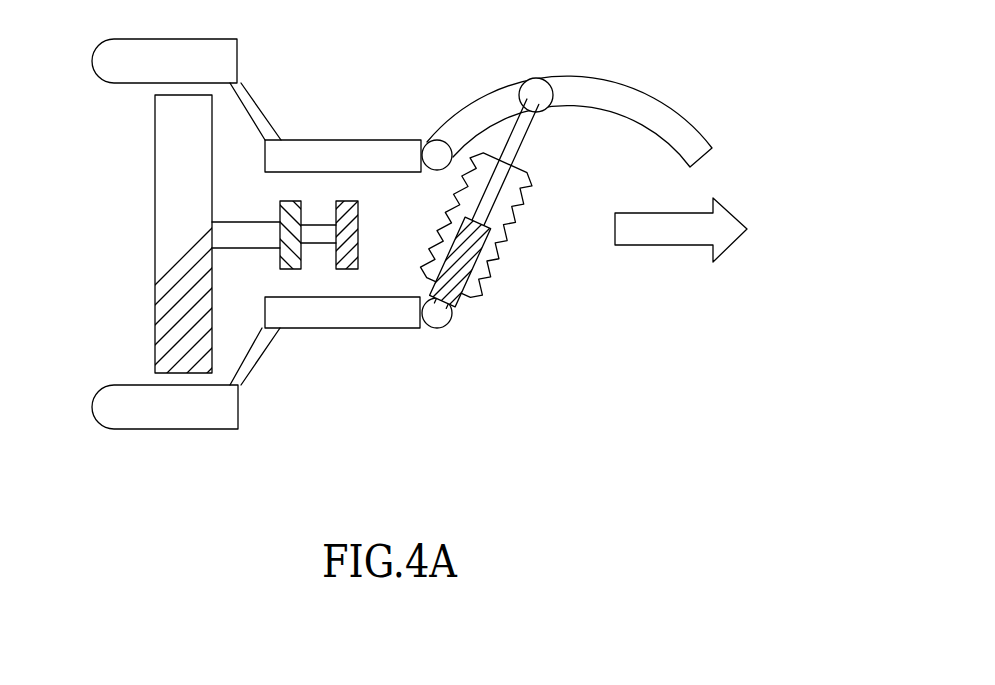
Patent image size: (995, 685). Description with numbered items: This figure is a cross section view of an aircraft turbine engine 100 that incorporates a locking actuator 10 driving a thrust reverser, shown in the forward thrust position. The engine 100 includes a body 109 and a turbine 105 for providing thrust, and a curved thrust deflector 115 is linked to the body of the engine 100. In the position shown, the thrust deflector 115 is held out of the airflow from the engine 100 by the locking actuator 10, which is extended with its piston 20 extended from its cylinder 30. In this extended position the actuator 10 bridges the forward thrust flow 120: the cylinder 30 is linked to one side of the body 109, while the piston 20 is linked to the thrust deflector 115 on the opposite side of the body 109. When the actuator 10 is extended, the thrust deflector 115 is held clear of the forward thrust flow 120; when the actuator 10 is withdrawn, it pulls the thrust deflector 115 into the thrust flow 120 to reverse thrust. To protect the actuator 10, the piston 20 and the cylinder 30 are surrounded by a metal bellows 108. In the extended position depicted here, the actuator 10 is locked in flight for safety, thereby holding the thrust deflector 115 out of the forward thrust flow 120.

The turbine engine 100 is at (653, 383).
The turbine 105 is at (155, 243).
The body 109 is at (328, 140).
The thrust deflector 115 is at (600, 92).
The locking actuator 10 is at (482, 312).
The cylinder 30 is at (497, 245).
The piston 20 is at (520, 156).
The metal bellows 108 is at (490, 273).
The forward thrust flow 120 is at (652, 247).